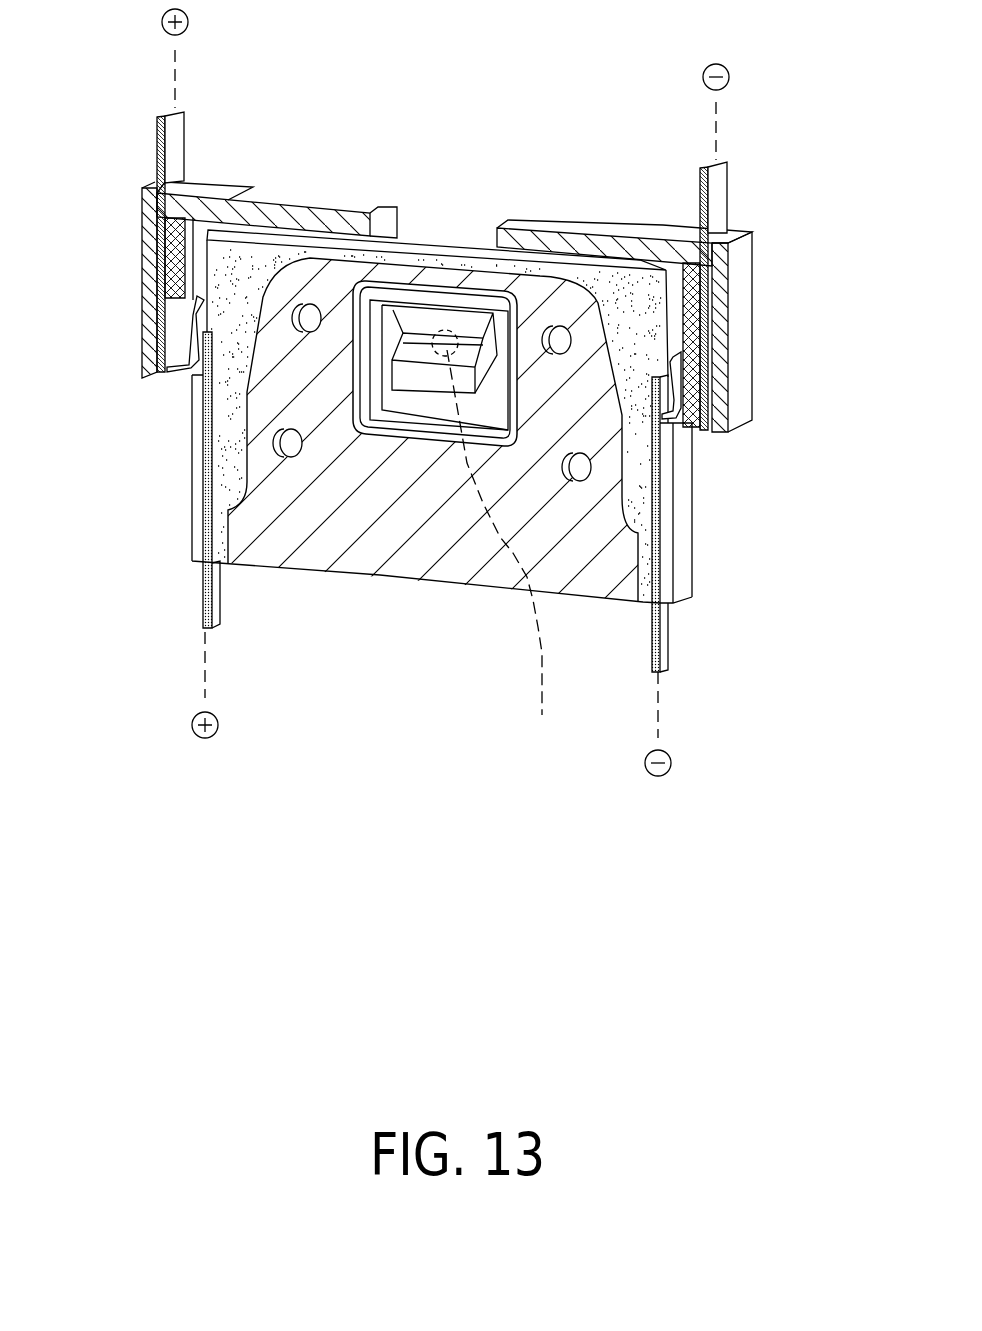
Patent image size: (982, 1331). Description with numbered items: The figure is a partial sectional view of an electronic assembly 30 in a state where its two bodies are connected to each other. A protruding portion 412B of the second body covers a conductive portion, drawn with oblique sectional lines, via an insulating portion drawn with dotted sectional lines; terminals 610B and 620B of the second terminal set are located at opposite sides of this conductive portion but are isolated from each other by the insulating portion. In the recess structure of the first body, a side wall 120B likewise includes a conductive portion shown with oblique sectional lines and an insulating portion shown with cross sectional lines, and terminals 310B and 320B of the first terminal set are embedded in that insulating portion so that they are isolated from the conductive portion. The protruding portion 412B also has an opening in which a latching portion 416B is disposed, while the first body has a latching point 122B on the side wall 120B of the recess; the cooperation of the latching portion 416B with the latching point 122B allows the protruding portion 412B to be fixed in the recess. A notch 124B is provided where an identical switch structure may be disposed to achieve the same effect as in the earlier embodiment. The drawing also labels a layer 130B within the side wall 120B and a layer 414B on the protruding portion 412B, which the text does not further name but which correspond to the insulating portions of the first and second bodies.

The electronic assembly 30 is at (870, 876).
The side wall 120B is at (738, 355).
The latching point 122B is at (497, 545).
The notch 124B is at (437, 226).
The sealing member 130B is at (712, 288).
The terminal 310B is at (160, 142).
The terminal 320B is at (715, 192).
The protruding portion 412B is at (367, 542).
The insulating layer 414B is at (637, 460).
The latching portion 416B is at (470, 328).
The terminal 610B is at (207, 468).
The terminal 620B is at (652, 518).